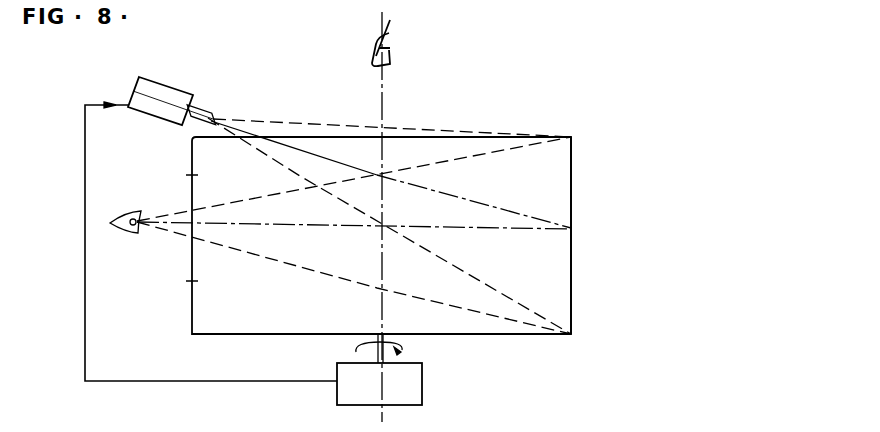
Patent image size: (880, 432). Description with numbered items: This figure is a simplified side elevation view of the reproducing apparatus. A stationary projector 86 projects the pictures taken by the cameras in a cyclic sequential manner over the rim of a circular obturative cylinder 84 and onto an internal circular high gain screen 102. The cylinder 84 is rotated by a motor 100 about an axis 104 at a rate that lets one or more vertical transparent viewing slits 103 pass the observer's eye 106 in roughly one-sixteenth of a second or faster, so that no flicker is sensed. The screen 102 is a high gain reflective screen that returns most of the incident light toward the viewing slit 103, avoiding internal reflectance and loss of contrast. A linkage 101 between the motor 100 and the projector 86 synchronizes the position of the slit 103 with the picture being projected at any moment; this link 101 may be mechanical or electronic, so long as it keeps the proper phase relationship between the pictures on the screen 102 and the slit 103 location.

The circular obturative cylinder 84 is at (232, 335).
The stationary projector 86 is at (168, 82).
The motor 100 is at (423, 382).
The linkage 101 is at (95, 107).
The internal circular high gain screen 102 is at (571, 191).
The vertical transparent viewing slit 103 is at (192, 234).
The axis 104 is at (384, 100).
The observer's eye 106 is at (128, 234).